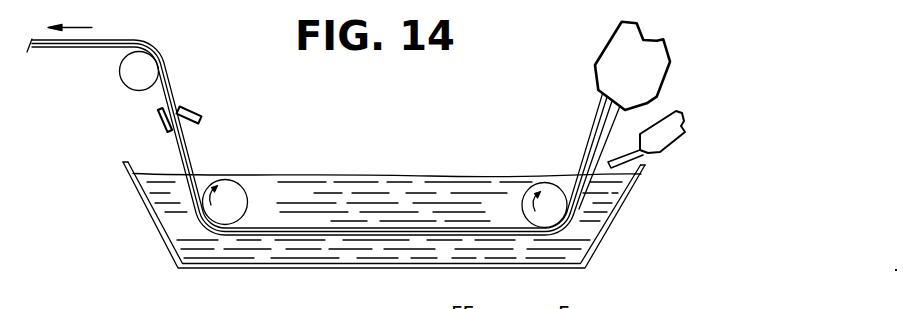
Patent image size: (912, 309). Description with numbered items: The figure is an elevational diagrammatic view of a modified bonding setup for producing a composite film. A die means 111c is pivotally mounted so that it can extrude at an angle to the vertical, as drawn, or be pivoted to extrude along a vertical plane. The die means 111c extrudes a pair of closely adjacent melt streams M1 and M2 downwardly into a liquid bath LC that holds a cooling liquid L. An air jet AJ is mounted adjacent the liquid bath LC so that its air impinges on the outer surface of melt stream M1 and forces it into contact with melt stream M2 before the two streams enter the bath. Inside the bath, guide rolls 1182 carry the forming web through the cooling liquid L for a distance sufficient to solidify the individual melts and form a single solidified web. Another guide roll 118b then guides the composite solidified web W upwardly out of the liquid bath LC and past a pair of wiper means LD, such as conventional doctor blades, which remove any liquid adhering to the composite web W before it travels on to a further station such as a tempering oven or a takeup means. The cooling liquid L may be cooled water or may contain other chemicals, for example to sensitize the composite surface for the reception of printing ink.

The guide roll 118b is at (141, 74).
The guide rolls 1182 is at (238, 202).
The wiper means LD is at (230, 108).
The cooling liquid L is at (369, 193).
The composite web W is at (414, 230).
The liquid bath LC is at (610, 233).
The die means 111c is at (717, 26).
The melt stream M2 is at (596, 113).
The melt stream M1 is at (623, 117).
The air jet AJ is at (655, 141).